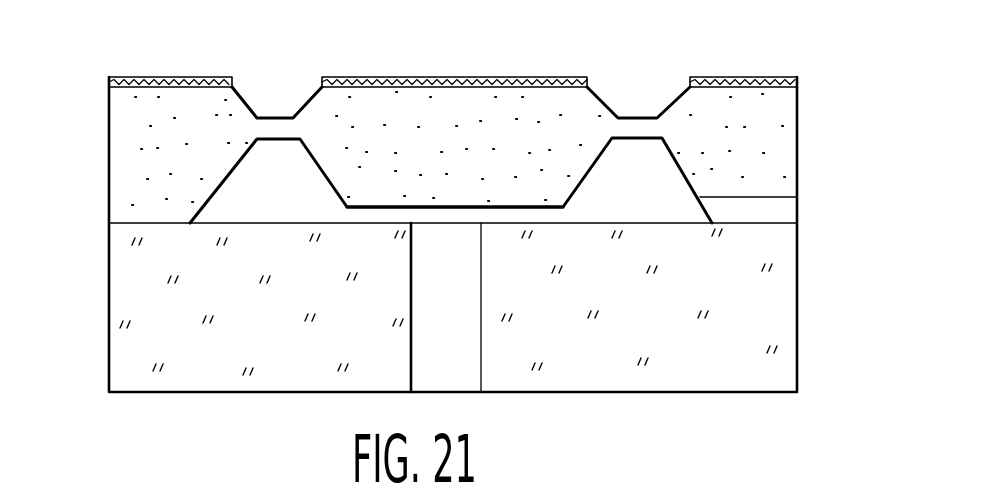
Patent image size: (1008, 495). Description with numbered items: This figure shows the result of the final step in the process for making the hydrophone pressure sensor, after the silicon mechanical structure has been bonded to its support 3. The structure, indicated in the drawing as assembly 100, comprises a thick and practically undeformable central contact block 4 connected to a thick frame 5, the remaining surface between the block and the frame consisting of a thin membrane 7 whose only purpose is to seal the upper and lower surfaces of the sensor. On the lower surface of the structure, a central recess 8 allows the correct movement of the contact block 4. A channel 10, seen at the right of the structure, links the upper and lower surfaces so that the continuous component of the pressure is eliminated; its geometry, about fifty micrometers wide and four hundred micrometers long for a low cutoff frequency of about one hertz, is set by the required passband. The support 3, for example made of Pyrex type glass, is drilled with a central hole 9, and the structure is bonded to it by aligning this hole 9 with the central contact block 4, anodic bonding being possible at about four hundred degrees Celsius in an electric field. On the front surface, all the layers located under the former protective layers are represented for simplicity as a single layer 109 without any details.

The support 3 is at (765, 317).
The central contact block 4 is at (415, 150).
The frame 5 is at (150, 150).
The membrane 7 is at (270, 125).
The central recess 8 is at (547, 215).
The central hole 9 is at (466, 373).
The channel 10 is at (783, 213).
The device structure 100 is at (804, 155).
The single layer 109 is at (503, 77).